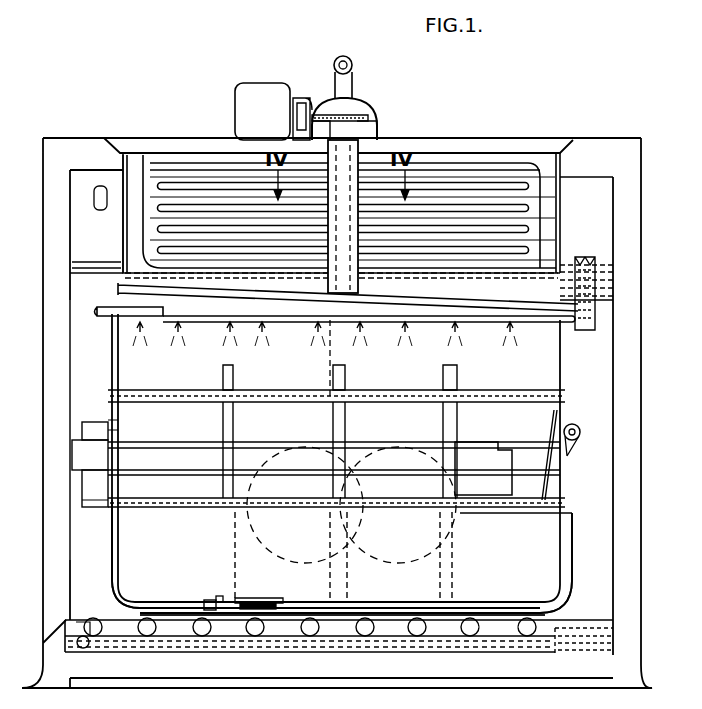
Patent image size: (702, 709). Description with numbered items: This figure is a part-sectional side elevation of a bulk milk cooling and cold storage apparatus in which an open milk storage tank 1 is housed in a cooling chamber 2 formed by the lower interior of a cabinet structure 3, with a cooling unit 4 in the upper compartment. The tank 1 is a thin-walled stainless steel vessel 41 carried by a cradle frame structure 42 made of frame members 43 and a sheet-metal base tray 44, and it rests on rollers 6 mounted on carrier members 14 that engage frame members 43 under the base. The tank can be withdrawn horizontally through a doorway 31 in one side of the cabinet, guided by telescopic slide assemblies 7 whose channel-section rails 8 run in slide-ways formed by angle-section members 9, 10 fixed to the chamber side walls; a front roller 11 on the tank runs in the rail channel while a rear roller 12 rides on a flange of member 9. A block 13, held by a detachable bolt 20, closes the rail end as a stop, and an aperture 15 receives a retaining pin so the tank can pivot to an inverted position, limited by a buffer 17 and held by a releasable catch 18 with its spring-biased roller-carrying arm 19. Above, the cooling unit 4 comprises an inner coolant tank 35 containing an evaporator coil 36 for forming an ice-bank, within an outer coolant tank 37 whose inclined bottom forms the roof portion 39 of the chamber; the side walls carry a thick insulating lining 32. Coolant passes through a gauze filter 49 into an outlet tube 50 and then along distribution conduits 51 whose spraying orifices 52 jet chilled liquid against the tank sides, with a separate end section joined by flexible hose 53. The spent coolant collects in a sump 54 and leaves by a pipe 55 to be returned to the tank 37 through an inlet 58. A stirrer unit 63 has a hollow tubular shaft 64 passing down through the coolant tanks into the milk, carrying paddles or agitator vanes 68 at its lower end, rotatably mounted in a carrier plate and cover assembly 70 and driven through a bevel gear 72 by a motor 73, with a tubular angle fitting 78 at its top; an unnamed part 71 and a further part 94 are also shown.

The milk storage tank 1 is at (530, 365).
The cooling chamber 2 is at (82, 366).
The cabinet or storage enclosure structure 3 is at (643, 363).
The cooling unit 4 is at (590, 172).
The rollers 6 is at (312, 626).
The telescopic slide assemblies 7 is at (260, 442).
The extensible arm member or rail 8 is at (480, 447).
The angle-section member 9 is at (92, 428).
The angle-section member 10 is at (100, 503).
The front roller 11 is at (305, 452).
The rear roller 12 is at (576, 424).
The block 13 is at (70, 449).
The carrier members 14 is at (182, 630).
The aperture 15 is at (88, 476).
The abutment stop or buffer 17 is at (205, 600).
The releasable catch 18 is at (262, 597).
The pivoted spring-biased roller-carrying arm 19 is at (218, 596).
The detachable bolt 20 is at (70, 432).
The opening or doorway 31 is at (54, 321).
The thermally-insulating lining 32 is at (628, 499).
The inner coolant tank 35 is at (562, 198).
The outer coolant tank 37 is at (612, 225).
The evaporator coil 36 is at (479, 197).
The roof portion 39 is at (89, 277).
The thin-walled stainless steel vessel 41 is at (530, 470).
The cradle frame structure 42 is at (574, 537).
The frame members 43 is at (396, 618).
The sheet-metal base tray 44 is at (118, 586).
The gauze filter 49 is at (585, 262).
The outlet tube 50 is at (593, 281).
The distribution conduits 51 is at (568, 322).
The perforations or spraying orifices 52 is at (278, 323).
The flexible hose 53 is at (133, 318).
The trough or sump 54 is at (578, 640).
The pipe 55 is at (84, 648).
The inlet 58 is at (104, 211).
The stirrer unit 63 is at (368, 100).
The hollow tubular shaft 64 is at (340, 358).
The paddles or agitator vanes 68 is at (292, 548).
The carrier plate and cover assembly 70 is at (380, 113).
The support block 71 is at (378, 129).
The bevel gear 72 is at (315, 124).
The motor 73 is at (256, 87).
The tubular angle fitting 78 is at (350, 80).
The roller support 94 is at (497, 627).